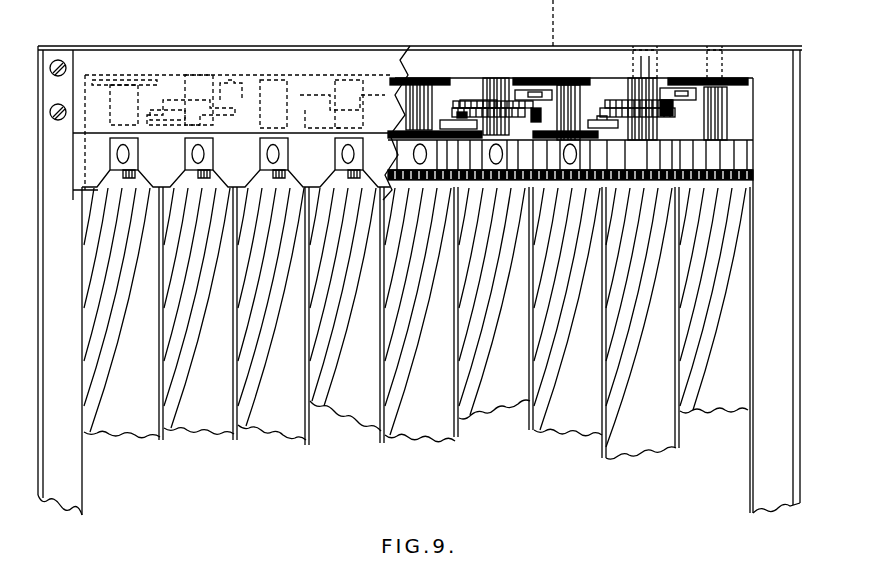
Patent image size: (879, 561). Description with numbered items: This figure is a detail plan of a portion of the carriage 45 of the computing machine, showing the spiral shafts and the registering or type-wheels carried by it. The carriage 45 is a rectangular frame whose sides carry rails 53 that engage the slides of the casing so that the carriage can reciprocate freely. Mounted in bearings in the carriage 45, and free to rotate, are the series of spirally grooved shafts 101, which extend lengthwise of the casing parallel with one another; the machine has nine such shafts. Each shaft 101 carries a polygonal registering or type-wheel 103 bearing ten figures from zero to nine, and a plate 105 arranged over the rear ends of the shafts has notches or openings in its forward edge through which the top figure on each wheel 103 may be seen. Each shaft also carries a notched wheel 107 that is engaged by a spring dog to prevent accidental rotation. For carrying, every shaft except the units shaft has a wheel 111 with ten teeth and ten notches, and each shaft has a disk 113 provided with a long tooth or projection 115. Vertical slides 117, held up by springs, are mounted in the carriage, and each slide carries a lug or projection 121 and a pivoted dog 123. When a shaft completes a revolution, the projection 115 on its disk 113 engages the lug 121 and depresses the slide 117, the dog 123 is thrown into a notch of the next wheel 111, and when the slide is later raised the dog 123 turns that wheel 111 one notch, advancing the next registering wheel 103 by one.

The carriage 45 is at (178, 50).
The rails 53 is at (425, 281).
The spirally grooved shafts 101 is at (148, 433).
The registering or type-wheel 103 is at (185, 152).
The plate 105 is at (112, 75).
The notched wheel 107 is at (270, 185).
The wheel 111 is at (472, 102).
The disk 113 is at (422, 82).
The long tooth or projection 115 is at (528, 84).
The vertical slide 117 is at (543, 82).
The lug or projection 121 is at (470, 78).
The pivoted dog 123 is at (540, 104).